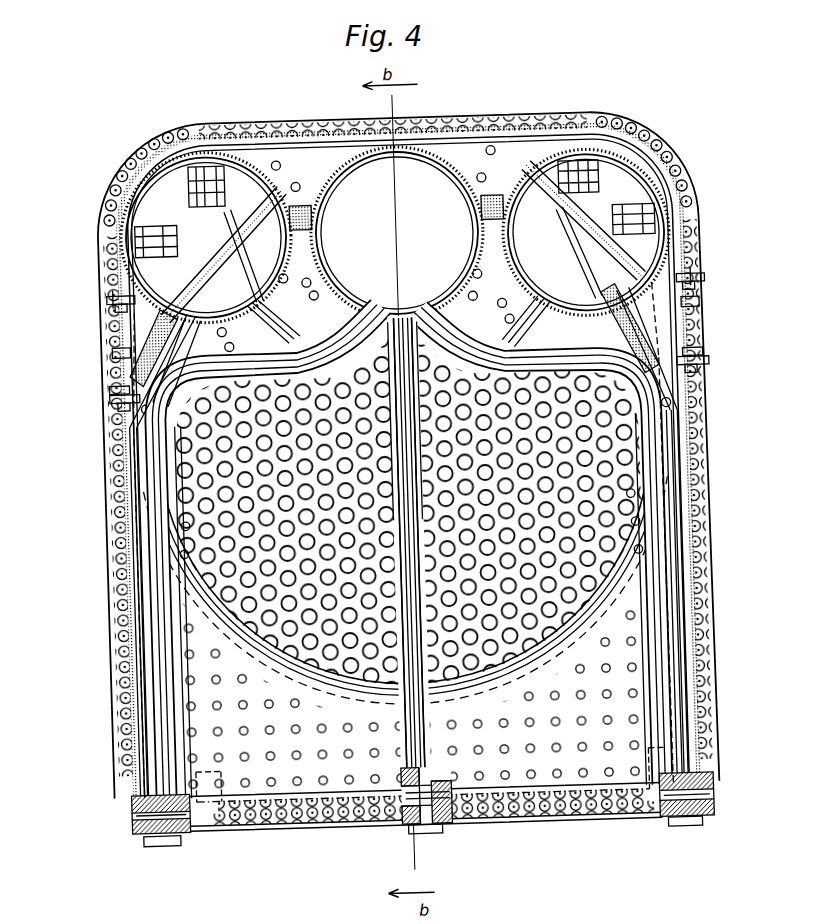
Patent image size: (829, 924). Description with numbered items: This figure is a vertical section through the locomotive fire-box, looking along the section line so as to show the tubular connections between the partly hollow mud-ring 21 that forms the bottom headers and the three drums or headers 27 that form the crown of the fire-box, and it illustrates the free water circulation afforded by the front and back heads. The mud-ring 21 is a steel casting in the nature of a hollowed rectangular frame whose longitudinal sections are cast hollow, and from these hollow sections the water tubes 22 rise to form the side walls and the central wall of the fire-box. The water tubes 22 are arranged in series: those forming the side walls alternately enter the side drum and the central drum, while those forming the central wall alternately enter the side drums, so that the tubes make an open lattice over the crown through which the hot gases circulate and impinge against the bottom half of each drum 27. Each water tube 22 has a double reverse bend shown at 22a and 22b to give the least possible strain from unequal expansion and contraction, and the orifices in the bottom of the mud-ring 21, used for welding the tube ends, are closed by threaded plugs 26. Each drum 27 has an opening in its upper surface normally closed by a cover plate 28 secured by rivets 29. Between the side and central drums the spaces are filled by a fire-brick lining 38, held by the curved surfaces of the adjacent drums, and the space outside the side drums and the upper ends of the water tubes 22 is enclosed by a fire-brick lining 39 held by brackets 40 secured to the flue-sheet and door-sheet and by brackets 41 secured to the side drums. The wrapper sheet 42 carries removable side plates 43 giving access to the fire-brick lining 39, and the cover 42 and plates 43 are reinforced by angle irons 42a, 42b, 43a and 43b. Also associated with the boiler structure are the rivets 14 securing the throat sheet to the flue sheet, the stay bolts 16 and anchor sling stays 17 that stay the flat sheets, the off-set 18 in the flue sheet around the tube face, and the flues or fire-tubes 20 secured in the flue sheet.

The rivets 14 is at (669, 168).
The stay bolts 16 is at (338, 776).
The anchor sling stays 17 is at (200, 267).
The off-set 18 is at (626, 607).
The flues or fire-tubes 20 is at (648, 439).
The mud-ring 21 is at (122, 822).
The water tubes 22 is at (150, 610).
The double reverse bend 22a is at (291, 320).
The double reverse bend 22b is at (404, 323).
The threaded plugs 26 is at (161, 839).
The drums or headers 27 is at (294, 230).
The cover plates 28 is at (187, 127).
The rivets 29 is at (222, 144).
The fire-brick lining 38 is at (308, 203).
The fire-brick lining 39 is at (167, 333).
The brackets 40 is at (129, 385).
The brackets 41 is at (128, 289).
The wrapper sheet 42 is at (142, 526).
The angle iron 42a is at (750, 237).
The angle iron 42b is at (745, 392).
The side plates 43 is at (120, 348).
The angle iron 43a is at (763, 278).
The angle iron 43b is at (756, 374).